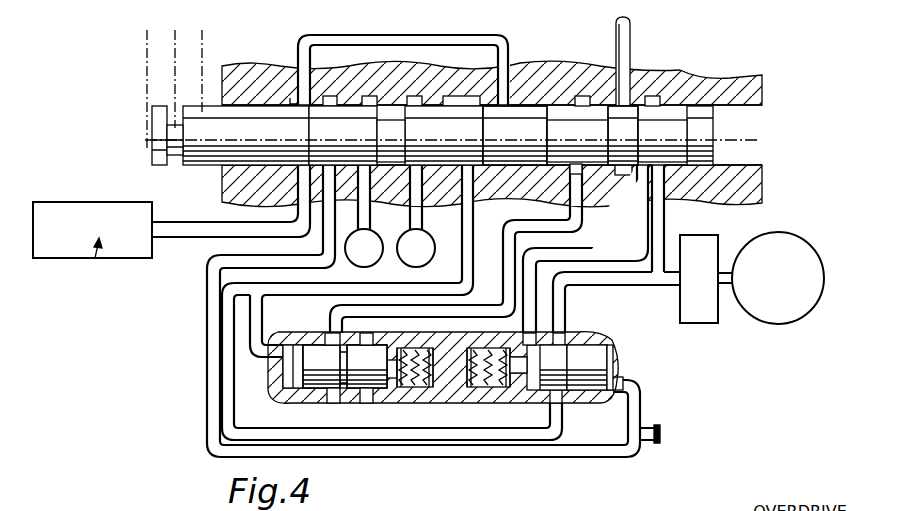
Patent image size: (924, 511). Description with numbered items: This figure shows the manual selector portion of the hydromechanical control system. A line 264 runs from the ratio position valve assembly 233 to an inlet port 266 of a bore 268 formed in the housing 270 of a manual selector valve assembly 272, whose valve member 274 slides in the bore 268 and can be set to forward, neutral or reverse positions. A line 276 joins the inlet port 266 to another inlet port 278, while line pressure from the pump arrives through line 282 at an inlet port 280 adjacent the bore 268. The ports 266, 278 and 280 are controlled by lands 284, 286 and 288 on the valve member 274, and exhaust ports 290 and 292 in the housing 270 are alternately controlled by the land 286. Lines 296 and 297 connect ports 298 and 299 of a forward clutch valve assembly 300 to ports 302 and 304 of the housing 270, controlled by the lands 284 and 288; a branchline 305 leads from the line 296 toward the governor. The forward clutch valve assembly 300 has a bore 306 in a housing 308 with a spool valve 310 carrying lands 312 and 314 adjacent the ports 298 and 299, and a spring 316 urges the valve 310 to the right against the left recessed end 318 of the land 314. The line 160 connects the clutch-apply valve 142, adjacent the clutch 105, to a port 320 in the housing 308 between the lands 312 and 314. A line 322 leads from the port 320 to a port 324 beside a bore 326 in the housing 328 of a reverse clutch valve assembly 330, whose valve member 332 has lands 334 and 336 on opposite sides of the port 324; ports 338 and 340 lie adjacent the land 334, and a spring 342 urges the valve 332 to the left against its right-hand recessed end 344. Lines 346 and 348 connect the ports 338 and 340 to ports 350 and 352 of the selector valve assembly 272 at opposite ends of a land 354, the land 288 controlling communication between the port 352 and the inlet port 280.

The clutch 105 is at (815, 252).
The clutch-apply valve 142 is at (700, 312).
The line 160 is at (625, 279).
The ratio position valve assembly 233 is at (92, 246).
The line 264 is at (219, 229).
The inlet port 266 is at (296, 100).
The bore 268 is at (340, 170).
The housing 270 is at (237, 72).
The manual selector valve assembly 272 is at (118, 40).
The valve member 274 is at (150, 148).
The line 276 is at (408, 36).
The inlet port 278 is at (526, 172).
The inlet port 280 is at (622, 176).
The line 282 is at (630, 22).
The land 284 is at (220, 135).
The land 286 is at (390, 120).
The land 288 is at (628, 112).
The exhaust port 290 is at (370, 185).
The exhaust port 292 is at (418, 96).
The line 296 is at (212, 337).
The line 297 is at (664, 216).
The port 298 is at (625, 385).
The port 299 is at (524, 390).
The forward clutch valve assembly 300 is at (613, 340).
The port 302 is at (330, 96).
The port 304 is at (655, 96).
The branchline 305 is at (658, 432).
The bore 306 is at (482, 380).
The housing 308 is at (445, 380).
The spool valve 310 is at (553, 382).
The land 312 is at (585, 345).
The land 314 is at (533, 345).
The spring 316 is at (462, 390).
The left recessed end 318 is at (490, 352).
The port 320 is at (583, 398).
The line 322 is at (413, 429).
The port 324 is at (365, 403).
The bore 326 is at (318, 400).
The housing 328 is at (335, 338).
The reverse clutch valve assembly 330 is at (268, 376).
The valve member 332 is at (342, 392).
The land 334 is at (318, 355).
The land 336 is at (468, 355).
The port 338 is at (290, 357).
The port 340 is at (333, 403).
The spring 342 is at (438, 352).
The right-hand recessed end 344 is at (412, 385).
The line 346 is at (422, 286).
The line 348 is at (500, 257).
The port 350 is at (462, 98).
The port 352 is at (578, 96).
The land 354 is at (520, 117).